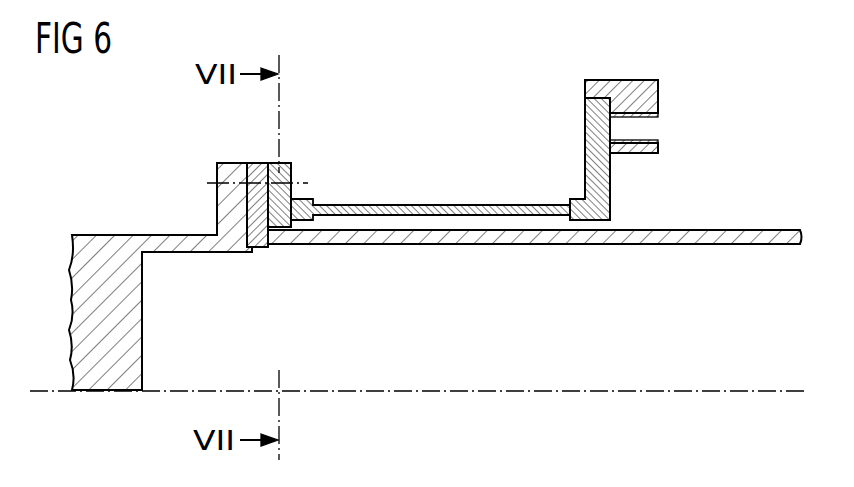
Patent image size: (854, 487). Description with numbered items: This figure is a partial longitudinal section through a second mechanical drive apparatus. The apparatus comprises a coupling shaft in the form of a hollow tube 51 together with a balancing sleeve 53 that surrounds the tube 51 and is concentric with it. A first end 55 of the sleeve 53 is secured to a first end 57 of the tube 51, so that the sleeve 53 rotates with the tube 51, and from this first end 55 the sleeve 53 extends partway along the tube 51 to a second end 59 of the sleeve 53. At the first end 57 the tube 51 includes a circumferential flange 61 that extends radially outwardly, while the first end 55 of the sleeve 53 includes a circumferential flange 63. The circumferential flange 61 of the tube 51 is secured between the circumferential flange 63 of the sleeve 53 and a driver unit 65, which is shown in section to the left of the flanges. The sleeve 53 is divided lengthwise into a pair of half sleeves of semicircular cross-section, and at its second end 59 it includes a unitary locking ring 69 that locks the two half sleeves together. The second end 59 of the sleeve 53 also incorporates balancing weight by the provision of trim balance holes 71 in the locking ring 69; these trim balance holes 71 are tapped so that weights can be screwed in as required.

The hollow tube 51 is at (738, 230).
The balancing sleeve 53 is at (436, 182).
The first end of sleeve 55 is at (290, 240).
The first end of tube 57 is at (260, 231).
The second end of sleeve 59 is at (612, 211).
The circumferential flange of tube 61 is at (258, 162).
The circumferential flange of sleeve 63 is at (289, 162).
The driver unit 65 is at (130, 312).
The locking ring 69 is at (659, 85).
The trim balance holes 71 is at (650, 128).